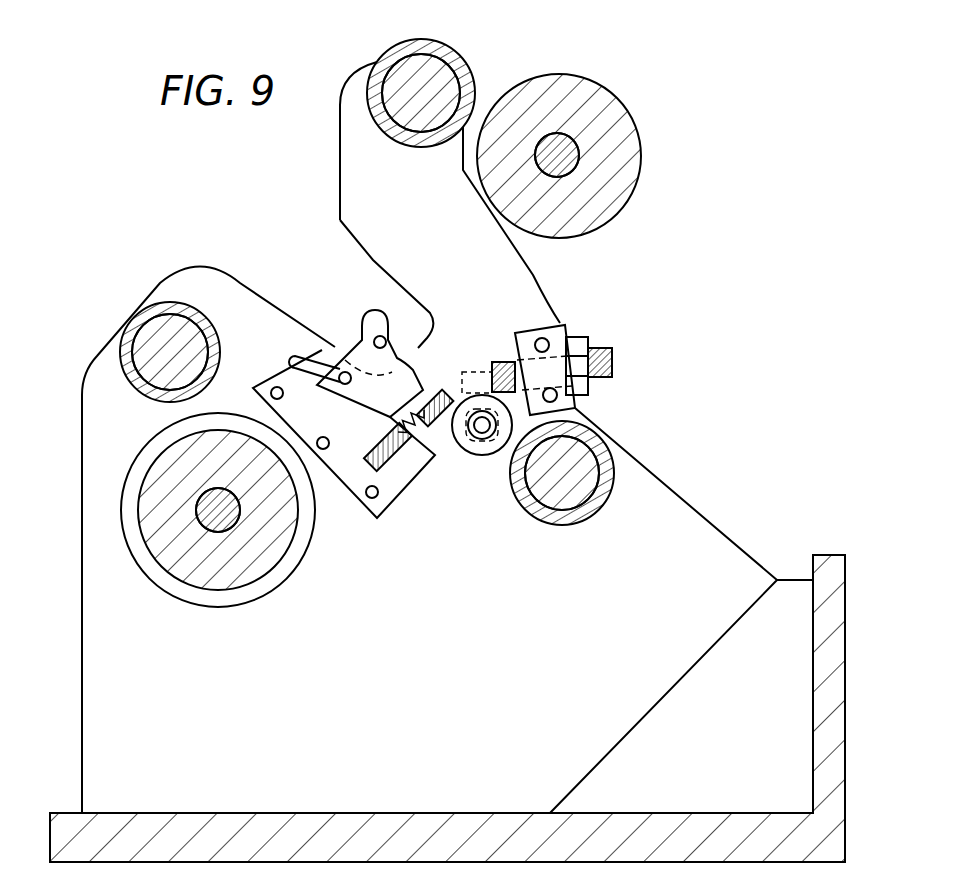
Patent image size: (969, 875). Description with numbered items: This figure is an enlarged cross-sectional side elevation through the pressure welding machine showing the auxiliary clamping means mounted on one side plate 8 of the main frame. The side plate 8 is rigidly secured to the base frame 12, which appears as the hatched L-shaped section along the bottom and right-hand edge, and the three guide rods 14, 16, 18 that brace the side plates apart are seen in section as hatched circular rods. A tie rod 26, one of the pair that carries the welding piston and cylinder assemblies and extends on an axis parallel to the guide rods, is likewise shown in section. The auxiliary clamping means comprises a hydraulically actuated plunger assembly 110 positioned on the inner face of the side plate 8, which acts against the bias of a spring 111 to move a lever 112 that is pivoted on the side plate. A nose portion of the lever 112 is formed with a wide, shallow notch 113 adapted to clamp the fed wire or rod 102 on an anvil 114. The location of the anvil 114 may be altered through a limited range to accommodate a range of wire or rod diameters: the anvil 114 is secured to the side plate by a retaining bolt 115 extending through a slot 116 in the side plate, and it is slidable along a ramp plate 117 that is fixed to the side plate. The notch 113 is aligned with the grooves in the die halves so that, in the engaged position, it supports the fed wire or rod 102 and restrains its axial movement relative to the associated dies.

The side plate 8 is at (362, 718).
The base frame 12 is at (828, 560).
The guide rod 14 is at (147, 343).
The guide rod 16 is at (600, 450).
The guide rod 18 is at (450, 77).
The tie rod 26 is at (613, 107).
The fed wire or rod 102 is at (380, 337).
The hydraulically actuated plunger assembly 110 is at (502, 360).
The spring 111 is at (422, 435).
The lever 112 is at (443, 350).
The notch 113 is at (372, 335).
The anvil 114 is at (347, 352).
The retaining bolt 115 is at (342, 384).
The slot 116 is at (293, 362).
The ramp plate 117 is at (265, 403).